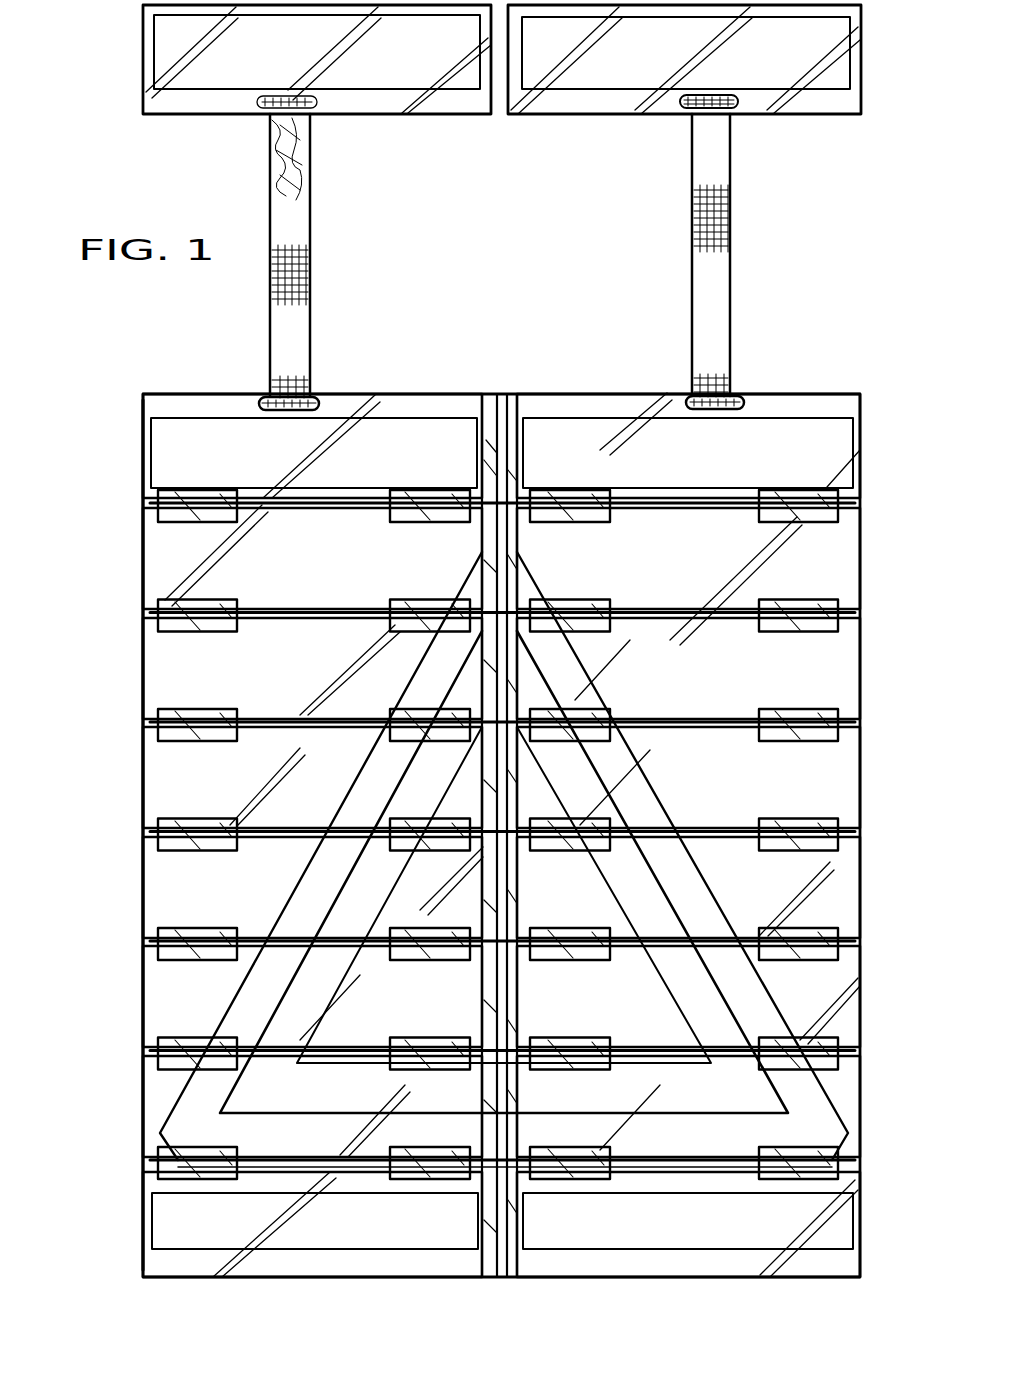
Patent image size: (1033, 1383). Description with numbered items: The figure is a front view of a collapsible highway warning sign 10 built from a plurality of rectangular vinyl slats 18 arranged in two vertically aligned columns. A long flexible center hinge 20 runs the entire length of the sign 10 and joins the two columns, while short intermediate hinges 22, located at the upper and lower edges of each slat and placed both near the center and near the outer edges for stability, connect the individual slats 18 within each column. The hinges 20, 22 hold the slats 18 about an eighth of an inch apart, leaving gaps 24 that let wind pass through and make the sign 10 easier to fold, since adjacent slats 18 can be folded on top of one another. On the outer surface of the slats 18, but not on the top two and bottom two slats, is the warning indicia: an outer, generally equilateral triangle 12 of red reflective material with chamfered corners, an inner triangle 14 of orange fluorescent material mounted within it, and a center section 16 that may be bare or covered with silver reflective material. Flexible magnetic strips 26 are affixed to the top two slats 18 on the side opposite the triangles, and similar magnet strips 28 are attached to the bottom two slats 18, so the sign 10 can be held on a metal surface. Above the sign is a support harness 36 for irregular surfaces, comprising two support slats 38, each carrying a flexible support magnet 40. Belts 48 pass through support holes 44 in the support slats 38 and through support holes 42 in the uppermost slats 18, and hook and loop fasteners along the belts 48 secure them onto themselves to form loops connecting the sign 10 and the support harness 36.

The sign 10 is at (145, 912).
The outer triangle 12 is at (652, 792).
The inner triangle 14 is at (614, 872).
The center section 16 is at (692, 935).
The rectangular slats 18 is at (845, 403).
The flexible hinge 20 is at (497, 1252).
The intermediate hinges 22 is at (446, 496).
The gaps 24 is at (145, 837).
The magnetic strips 26 is at (176, 402).
The magnet strips 28 is at (332, 1252).
The support harness 36 is at (390, 116).
The support slats 38 is at (143, 104).
The support magnets 40 is at (152, 48).
The support holes 42 is at (268, 392).
The support holes 44 is at (690, 118).
The belts 48 is at (305, 290).